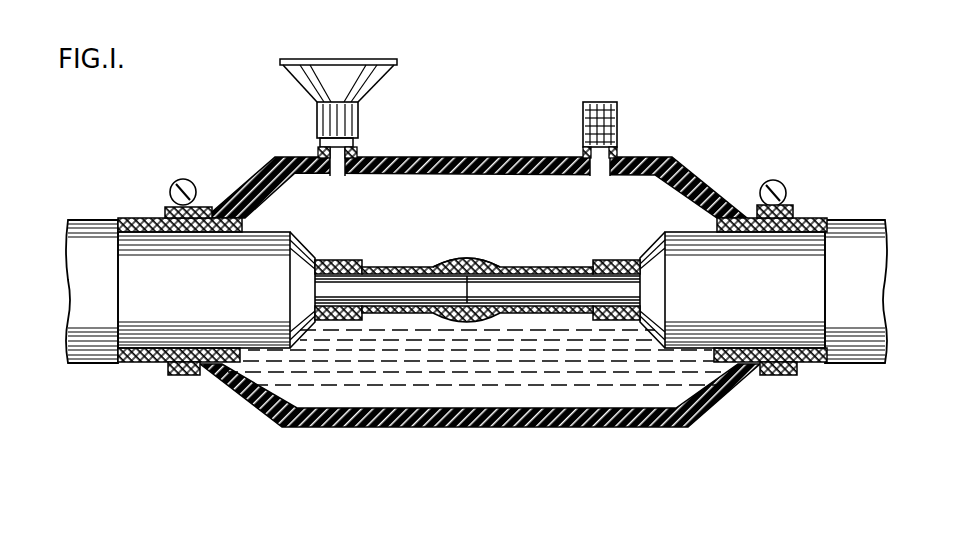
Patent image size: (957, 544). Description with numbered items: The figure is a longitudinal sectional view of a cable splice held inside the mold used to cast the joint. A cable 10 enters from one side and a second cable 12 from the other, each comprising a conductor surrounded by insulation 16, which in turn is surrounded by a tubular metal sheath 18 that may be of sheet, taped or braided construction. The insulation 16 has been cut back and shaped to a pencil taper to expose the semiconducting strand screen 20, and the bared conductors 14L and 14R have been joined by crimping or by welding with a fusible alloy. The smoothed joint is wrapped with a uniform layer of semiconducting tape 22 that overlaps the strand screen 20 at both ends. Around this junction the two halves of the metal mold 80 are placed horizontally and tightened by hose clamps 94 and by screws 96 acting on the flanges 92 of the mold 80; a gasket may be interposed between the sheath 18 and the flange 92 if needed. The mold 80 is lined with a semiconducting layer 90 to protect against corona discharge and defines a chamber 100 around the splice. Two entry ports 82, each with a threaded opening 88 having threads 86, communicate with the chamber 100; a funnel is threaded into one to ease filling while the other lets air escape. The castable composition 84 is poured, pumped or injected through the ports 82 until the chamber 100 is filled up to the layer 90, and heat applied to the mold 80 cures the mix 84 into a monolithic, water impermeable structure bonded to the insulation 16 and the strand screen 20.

The left cable 10 is at (60, 293).
The cable 12 is at (887, 284).
The left conductor 14L is at (398, 293).
The right conductor 14R is at (533, 293).
The insulation 16 is at (304, 338).
The tubular metal sheath 18 is at (797, 217).
The semiconducting strand screen 20 is at (336, 262).
The semiconducting tape 22 is at (488, 260).
The metal mold 80 is at (428, 152).
The entry port 82 is at (617, 148).
The castable composition 84 is at (629, 335).
The threads 86 is at (587, 112).
The threaded opening 88 is at (347, 100).
The semiconducting layer 90 is at (425, 428).
The flange 92 is at (170, 368).
The hose clamp 94 is at (772, 378).
The screw 96 is at (184, 182).
The mold chamber 100 is at (378, 219).